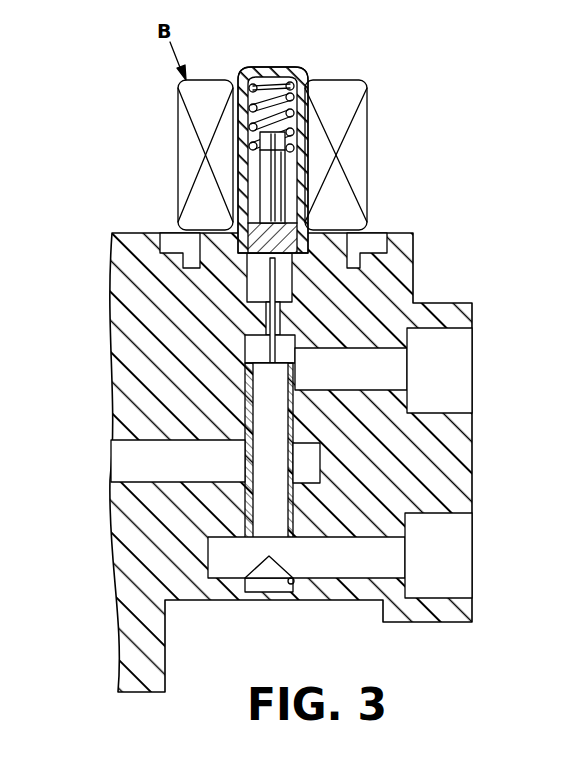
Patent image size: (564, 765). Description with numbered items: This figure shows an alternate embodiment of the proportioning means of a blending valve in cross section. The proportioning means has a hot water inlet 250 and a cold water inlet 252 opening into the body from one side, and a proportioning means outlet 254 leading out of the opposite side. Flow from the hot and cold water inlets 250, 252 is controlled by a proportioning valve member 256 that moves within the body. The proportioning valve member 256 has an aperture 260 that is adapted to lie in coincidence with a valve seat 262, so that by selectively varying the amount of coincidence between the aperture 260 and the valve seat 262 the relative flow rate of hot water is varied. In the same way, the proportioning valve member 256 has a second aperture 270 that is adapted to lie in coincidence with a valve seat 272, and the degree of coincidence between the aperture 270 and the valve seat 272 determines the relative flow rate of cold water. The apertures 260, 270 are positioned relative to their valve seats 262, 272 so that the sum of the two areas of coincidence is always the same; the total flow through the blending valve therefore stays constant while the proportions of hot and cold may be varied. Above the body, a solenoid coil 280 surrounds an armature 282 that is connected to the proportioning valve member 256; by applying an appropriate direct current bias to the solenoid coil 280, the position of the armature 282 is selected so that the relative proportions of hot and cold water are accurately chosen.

The hot water inlet 250 is at (457, 380).
The cold water inlet 252 is at (452, 566).
The proportioning means outlet 254 is at (114, 462).
The proportioning valve member 256 is at (317, 460).
The aperture 260 is at (294, 384).
The valve seat 262 is at (288, 333).
The second aperture 270 is at (291, 527).
The valve seat 272 is at (292, 578).
The solenoid coil 280 is at (352, 130).
The armature 282 is at (278, 194).